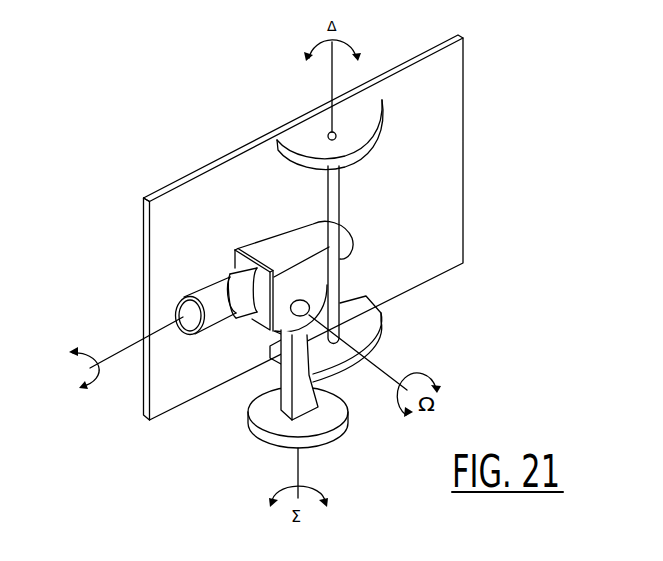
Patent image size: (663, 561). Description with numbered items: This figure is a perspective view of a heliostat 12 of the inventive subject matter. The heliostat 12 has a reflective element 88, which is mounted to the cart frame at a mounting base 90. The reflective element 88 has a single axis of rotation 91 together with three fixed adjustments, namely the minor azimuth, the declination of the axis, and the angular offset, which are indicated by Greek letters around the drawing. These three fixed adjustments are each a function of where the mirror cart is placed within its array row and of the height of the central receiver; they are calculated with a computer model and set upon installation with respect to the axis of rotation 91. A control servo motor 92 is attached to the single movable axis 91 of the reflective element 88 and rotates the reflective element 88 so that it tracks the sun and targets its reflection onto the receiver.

The heliostat 12 is at (522, 127).
The reflective element 88 is at (302, 117).
The mounting base 90 is at (281, 362).
The axis of rotation 91 is at (108, 383).
The control servo motor 92 is at (181, 311).